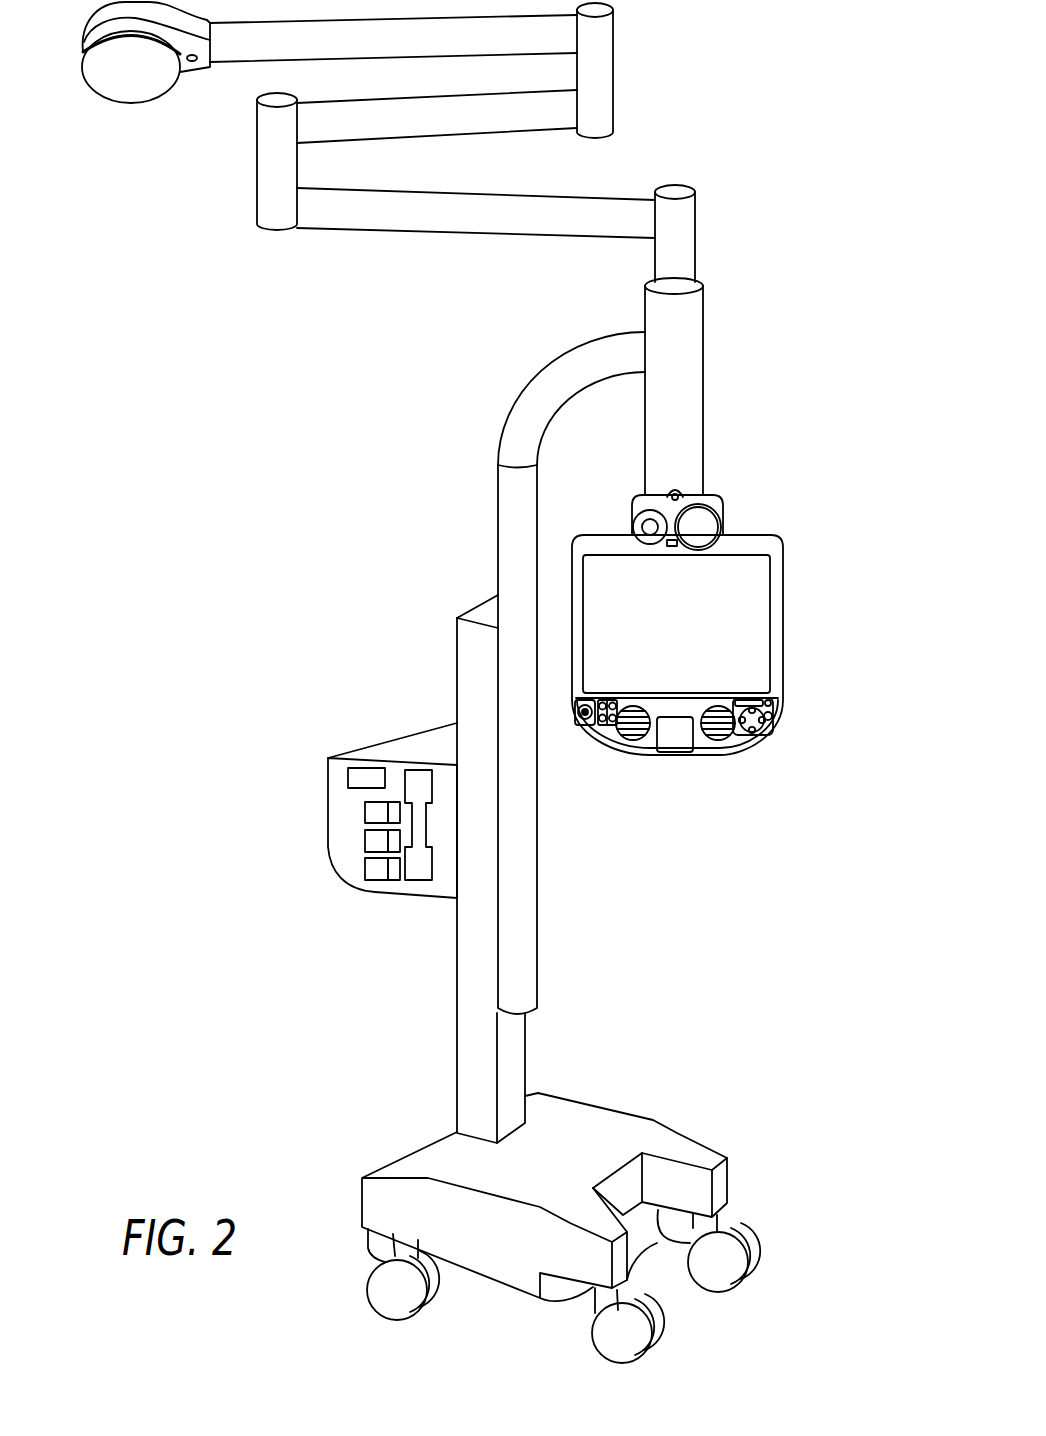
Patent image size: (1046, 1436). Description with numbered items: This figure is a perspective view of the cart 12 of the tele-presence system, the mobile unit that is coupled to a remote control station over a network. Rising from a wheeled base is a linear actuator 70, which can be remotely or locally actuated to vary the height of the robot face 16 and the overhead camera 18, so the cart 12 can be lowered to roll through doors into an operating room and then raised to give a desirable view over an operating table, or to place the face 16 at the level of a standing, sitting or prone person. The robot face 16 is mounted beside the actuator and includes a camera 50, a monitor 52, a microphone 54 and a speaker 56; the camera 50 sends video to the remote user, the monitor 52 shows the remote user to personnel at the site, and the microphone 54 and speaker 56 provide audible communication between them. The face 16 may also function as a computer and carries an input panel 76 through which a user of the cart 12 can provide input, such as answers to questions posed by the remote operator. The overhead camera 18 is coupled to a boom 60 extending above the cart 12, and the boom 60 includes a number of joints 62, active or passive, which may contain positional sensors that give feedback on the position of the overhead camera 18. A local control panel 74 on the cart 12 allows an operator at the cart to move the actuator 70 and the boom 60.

The cart 12 is at (428, 563).
The robot face 16 is at (745, 657).
The overhead camera 18 is at (132, 103).
The camera 50 is at (720, 506).
The monitor 52 is at (763, 602).
The microphone 54 is at (676, 490).
The speaker 56 is at (718, 740).
The boom 60 is at (435, 213).
The joint 62 is at (613, 72).
The linear actuator 70 is at (466, 1024).
The local control panel 74 is at (345, 853).
The input panel 76 is at (765, 723).